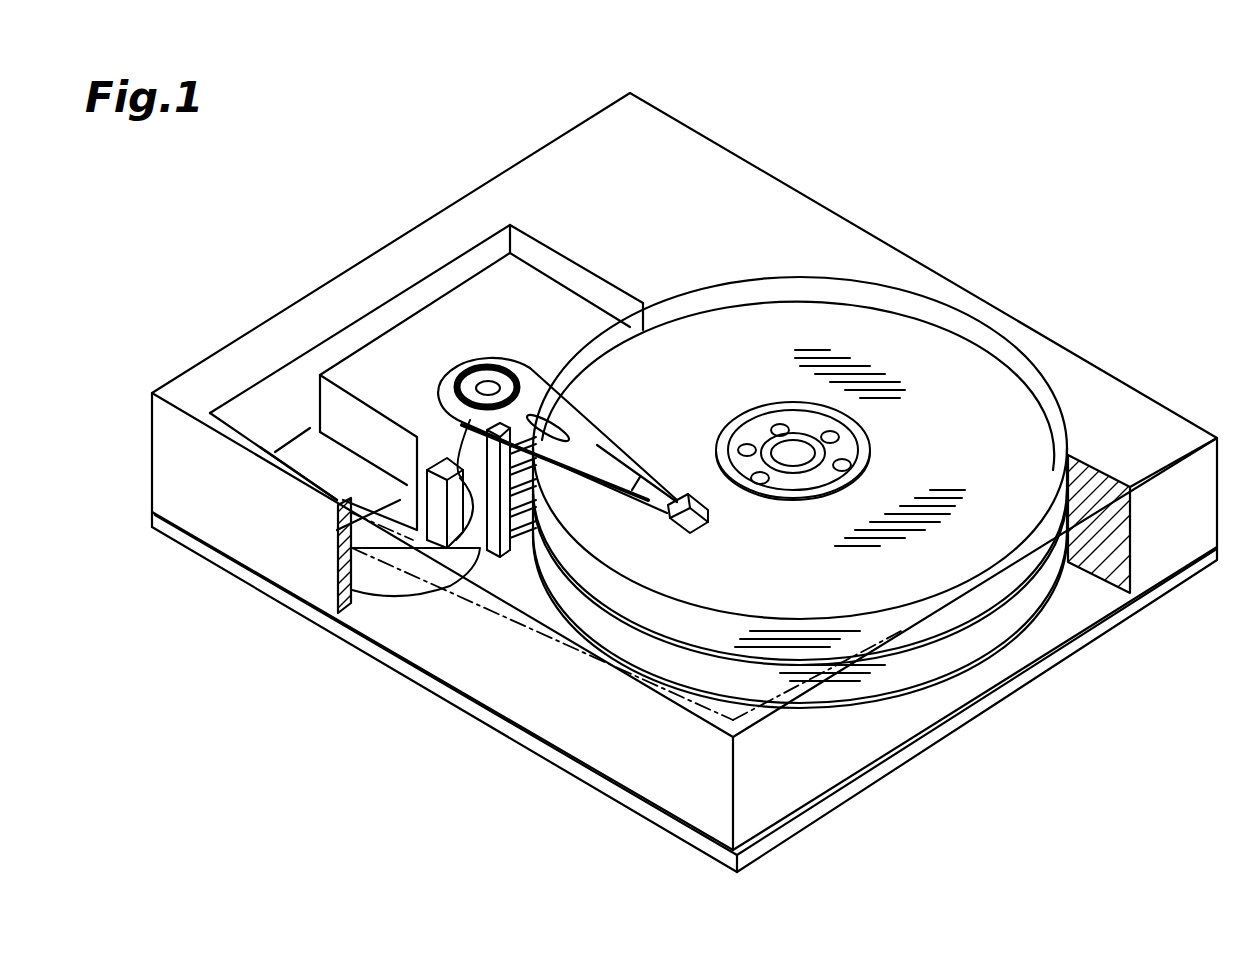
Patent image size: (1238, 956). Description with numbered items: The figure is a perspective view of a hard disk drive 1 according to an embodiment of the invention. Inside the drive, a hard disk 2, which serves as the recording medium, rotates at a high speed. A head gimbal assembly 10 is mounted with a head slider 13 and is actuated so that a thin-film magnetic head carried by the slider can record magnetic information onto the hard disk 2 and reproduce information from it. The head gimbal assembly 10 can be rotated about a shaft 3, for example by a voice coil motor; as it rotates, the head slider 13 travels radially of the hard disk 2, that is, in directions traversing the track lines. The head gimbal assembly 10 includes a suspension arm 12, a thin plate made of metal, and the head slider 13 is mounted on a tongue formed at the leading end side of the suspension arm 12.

The hard disk drive 1 is at (920, 195).
The hard disk 2 is at (925, 362).
The shaft 3 is at (490, 362).
The head gimbal assembly 10 is at (632, 443).
The suspension arm 12 is at (600, 477).
The head slider 13 is at (712, 518).